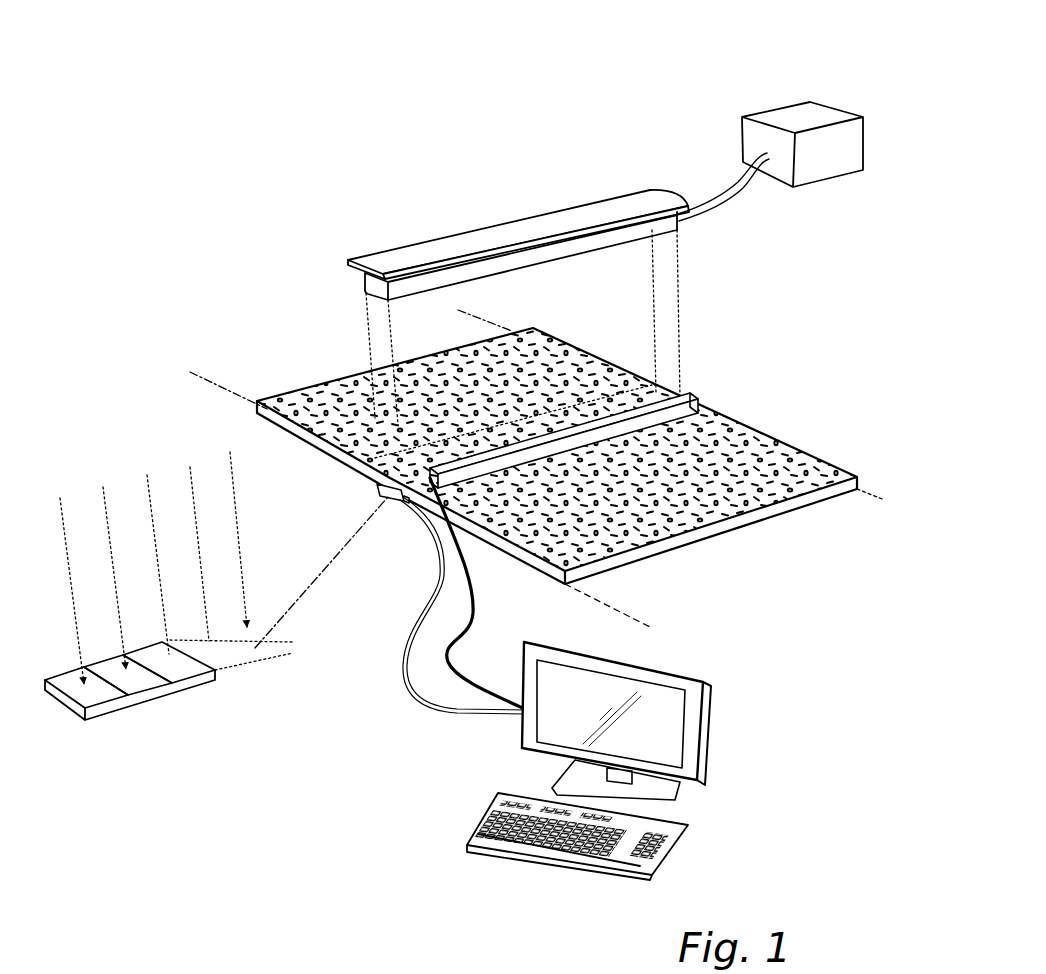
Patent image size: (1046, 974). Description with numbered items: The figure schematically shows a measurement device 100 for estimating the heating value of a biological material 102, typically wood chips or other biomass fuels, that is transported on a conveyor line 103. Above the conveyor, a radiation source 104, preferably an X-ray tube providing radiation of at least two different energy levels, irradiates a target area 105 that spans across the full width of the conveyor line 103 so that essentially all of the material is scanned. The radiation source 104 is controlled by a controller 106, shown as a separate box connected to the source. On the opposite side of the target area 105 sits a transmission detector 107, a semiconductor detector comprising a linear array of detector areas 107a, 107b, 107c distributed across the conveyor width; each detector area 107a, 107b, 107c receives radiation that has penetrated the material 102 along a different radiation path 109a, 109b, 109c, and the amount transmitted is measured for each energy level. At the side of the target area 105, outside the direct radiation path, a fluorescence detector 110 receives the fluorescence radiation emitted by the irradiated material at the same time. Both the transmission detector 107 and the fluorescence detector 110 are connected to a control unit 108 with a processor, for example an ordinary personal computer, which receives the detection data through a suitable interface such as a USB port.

The measurement device 100 is at (589, 101).
The biological material 102 is at (677, 441).
The conveyor line 103 is at (683, 568).
The radiation source 104 is at (614, 236).
The target area 105 is at (609, 402).
The controller 106 is at (800, 92).
The transmission detector 107 is at (281, 648).
The semiconductor detector area 107a is at (98, 702).
The semiconductor detector area 107b is at (143, 690).
The semiconductor detector area 107c is at (195, 671).
The control unit 108 is at (737, 736).
The radiation path 109a is at (62, 518).
The radiation path 109b is at (105, 510).
The radiation path 109c is at (150, 500).
The fluorescence detector 110 is at (690, 396).